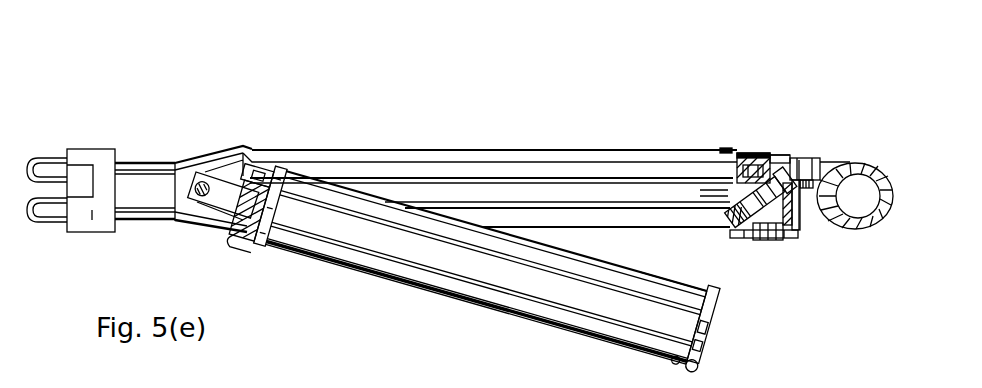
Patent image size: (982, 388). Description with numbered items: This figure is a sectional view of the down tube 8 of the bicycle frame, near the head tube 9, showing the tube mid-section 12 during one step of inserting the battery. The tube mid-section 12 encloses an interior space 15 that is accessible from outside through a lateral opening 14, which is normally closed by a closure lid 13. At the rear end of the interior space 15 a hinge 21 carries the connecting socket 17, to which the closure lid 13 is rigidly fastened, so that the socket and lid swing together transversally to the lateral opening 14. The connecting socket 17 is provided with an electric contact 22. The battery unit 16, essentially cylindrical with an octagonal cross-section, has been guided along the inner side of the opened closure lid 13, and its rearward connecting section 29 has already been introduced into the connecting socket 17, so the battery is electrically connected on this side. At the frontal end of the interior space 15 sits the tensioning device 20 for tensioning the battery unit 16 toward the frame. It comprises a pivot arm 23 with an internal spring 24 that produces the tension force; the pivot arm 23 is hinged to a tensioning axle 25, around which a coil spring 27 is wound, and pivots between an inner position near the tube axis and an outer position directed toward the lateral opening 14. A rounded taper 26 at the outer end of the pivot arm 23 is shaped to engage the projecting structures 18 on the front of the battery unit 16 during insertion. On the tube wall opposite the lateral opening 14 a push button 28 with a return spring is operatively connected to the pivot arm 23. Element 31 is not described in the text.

The down tube 8 is at (258, 111).
The head tube 9 is at (865, 230).
The tube mid-section 12 is at (416, 137).
The closure lid 13 is at (365, 278).
The lateral opening 14 is at (724, 248).
The interior space 15 is at (537, 177).
The battery unit 16 is at (679, 265).
The connecting socket 17 is at (256, 245).
The projecting structures 18 is at (714, 329).
The tensioning device 20 is at (732, 230).
The hinge 21 is at (203, 175).
The electric contact 22 is at (264, 190).
The pivot arm 23 is at (745, 175).
The spring 24 is at (763, 205).
The tensioning axle 25 is at (786, 198).
The rounded taper 26 is at (725, 189).
The coil spring 27 is at (791, 222).
The push button 28 is at (754, 153).
The connecting section 29 is at (238, 236).
The holder 31 is at (818, 168).